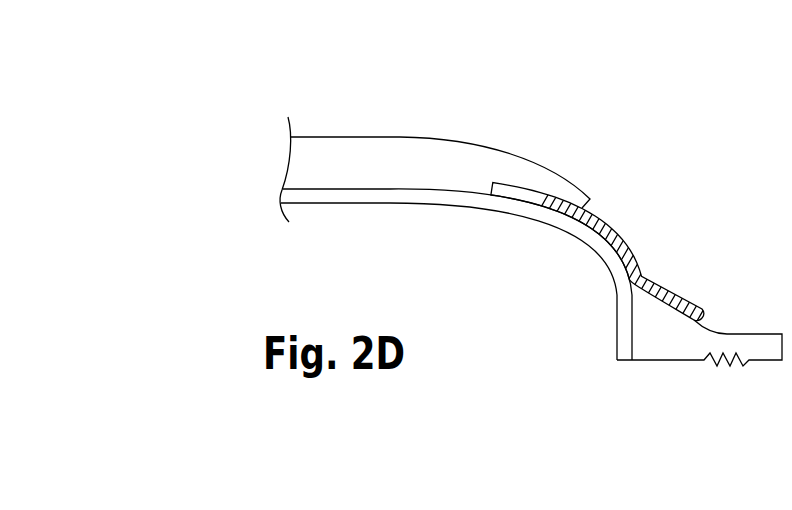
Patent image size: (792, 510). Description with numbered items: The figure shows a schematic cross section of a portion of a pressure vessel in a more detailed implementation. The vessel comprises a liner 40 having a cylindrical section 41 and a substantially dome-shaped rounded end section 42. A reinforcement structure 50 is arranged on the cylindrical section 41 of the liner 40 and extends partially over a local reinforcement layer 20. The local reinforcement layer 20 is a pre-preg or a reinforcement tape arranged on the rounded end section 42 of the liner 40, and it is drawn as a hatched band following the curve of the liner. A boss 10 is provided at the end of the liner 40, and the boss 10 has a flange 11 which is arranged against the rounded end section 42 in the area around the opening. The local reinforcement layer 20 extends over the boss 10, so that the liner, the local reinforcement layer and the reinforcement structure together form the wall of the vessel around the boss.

The boss 10 is at (749, 343).
The flange 11 is at (648, 302).
The local reinforcement layer 20 is at (603, 238).
The liner 40 is at (456, 274).
The cylindrical section 41 is at (322, 195).
The rounded end section 42 is at (590, 248).
The reinforcement structure 50 is at (444, 122).